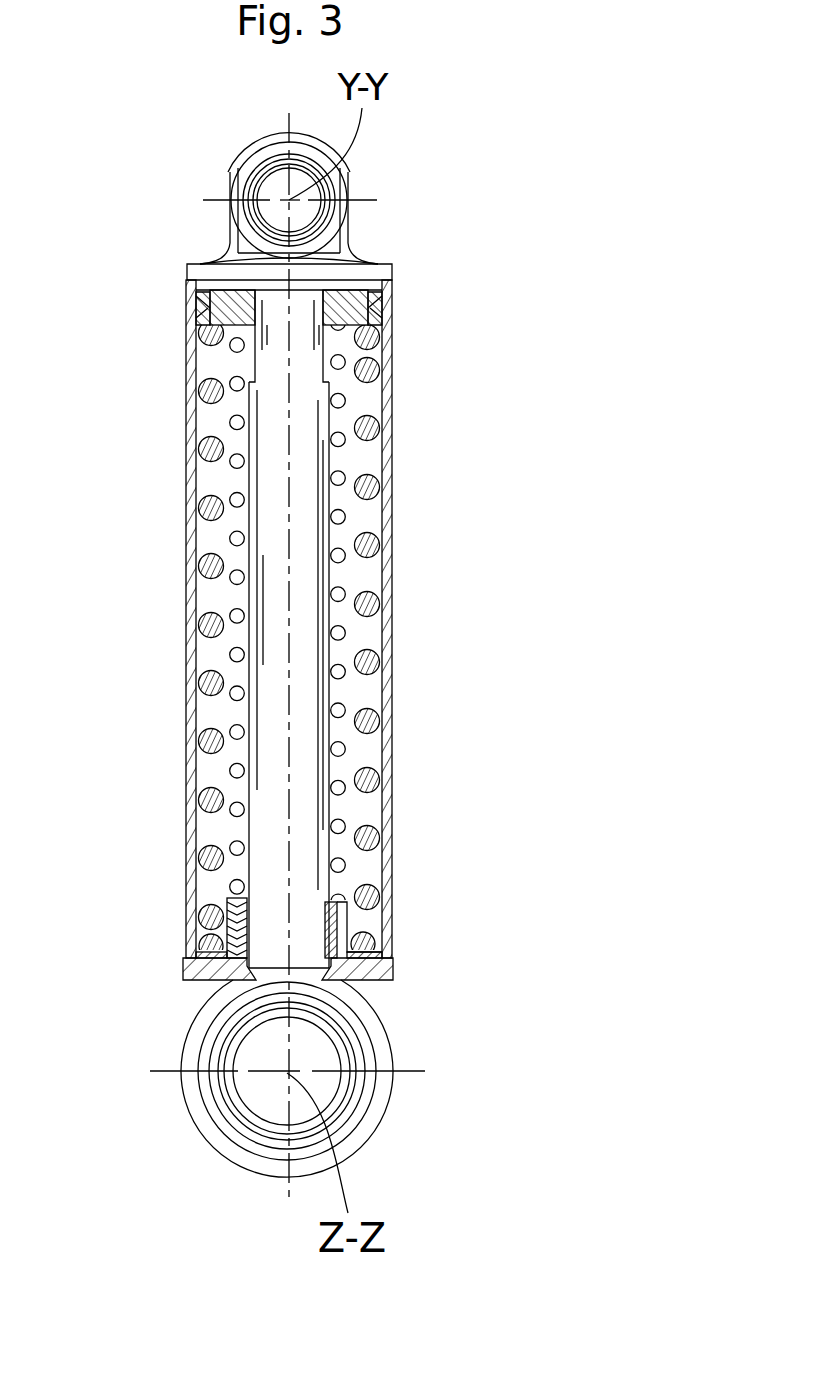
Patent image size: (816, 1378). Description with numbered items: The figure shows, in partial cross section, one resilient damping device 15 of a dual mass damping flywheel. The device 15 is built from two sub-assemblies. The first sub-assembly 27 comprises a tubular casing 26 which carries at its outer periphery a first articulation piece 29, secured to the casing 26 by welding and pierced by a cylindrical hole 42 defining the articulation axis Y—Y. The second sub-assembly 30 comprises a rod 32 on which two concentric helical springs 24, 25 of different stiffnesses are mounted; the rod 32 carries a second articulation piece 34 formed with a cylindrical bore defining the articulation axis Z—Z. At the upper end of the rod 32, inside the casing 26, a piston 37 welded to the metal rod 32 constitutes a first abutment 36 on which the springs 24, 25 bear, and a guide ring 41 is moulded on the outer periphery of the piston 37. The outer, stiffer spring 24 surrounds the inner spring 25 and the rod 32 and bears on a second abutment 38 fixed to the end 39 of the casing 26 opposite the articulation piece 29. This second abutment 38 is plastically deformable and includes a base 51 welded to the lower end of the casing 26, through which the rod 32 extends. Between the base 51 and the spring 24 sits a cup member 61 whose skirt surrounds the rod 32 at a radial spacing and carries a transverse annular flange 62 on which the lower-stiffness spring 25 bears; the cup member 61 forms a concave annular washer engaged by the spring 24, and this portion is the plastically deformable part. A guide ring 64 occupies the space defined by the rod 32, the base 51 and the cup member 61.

The damping device 15 is at (170, 646).
The helical spring 24 is at (205, 452).
The helical spring 25 is at (236, 540).
The casing 26 is at (392, 450).
The first sub-assembly 27 is at (184, 723).
The first articulation piece 29 is at (348, 168).
The second sub-assembly 30 is at (245, 832).
The rod 32 is at (316, 573).
The second articulation piece 34 is at (388, 1100).
The first abutment 36 is at (385, 310).
The piston 37 is at (207, 300).
The second abutment 38 is at (181, 971).
The end of the casing 39 is at (392, 882).
The guide ring 41 is at (196, 318).
The cylindrical hole 42 is at (265, 188).
The base 51 is at (392, 972).
The cup member 61 is at (347, 923).
The transverse annular flange 62 is at (225, 902).
The guide ring 64 is at (226, 935).